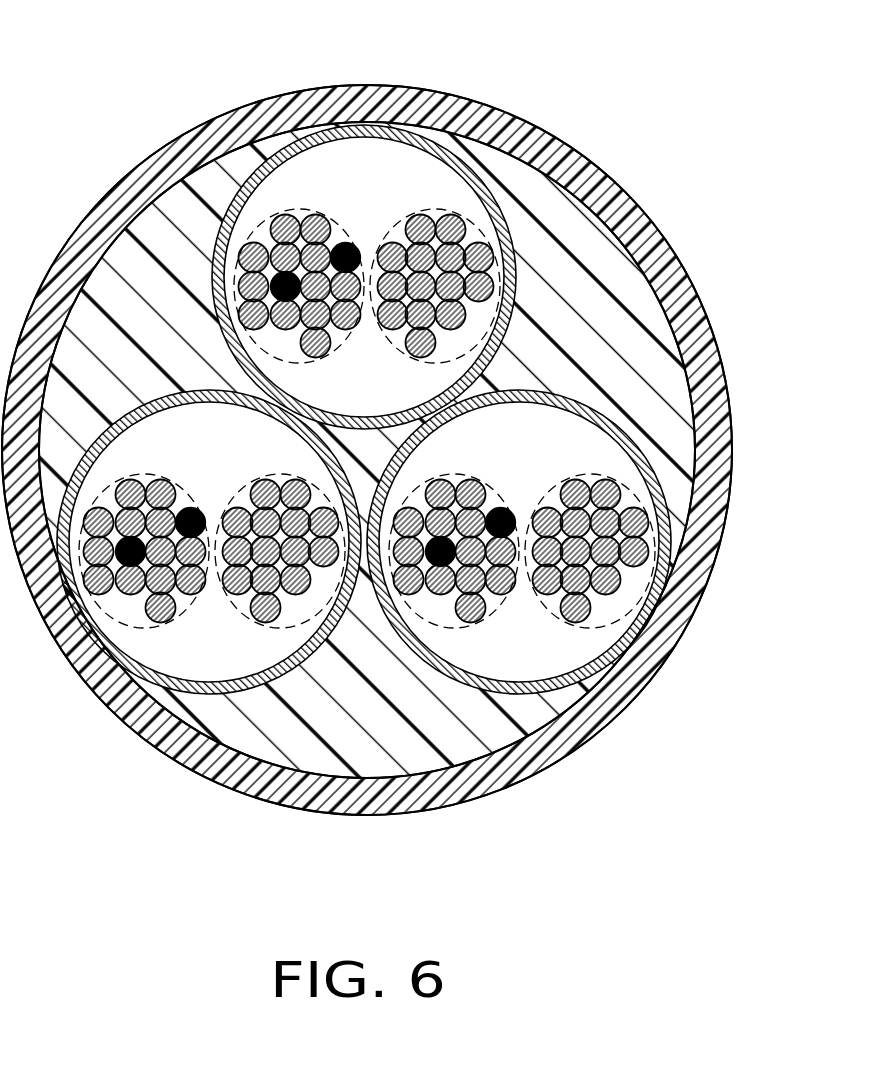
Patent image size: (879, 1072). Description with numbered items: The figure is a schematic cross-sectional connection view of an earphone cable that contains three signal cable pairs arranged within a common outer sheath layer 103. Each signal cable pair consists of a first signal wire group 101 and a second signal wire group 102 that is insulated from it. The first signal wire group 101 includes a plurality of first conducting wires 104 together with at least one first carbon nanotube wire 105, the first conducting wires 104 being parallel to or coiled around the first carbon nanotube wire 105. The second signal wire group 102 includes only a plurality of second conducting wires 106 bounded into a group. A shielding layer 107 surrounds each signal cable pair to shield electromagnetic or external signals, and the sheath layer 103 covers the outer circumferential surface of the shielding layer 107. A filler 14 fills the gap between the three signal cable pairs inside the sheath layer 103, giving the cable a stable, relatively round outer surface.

The first signal wire group 101 is at (367, 407).
The second signal wire group 102 is at (407, 213).
The sheath layer 103 is at (460, 107).
The first conducting wires 104 is at (310, 220).
The first carbon nanotube wire 105 is at (350, 242).
The second conducting wires 106 is at (458, 215).
The shielding layer 107 is at (580, 198).
The filler 14 is at (590, 343).